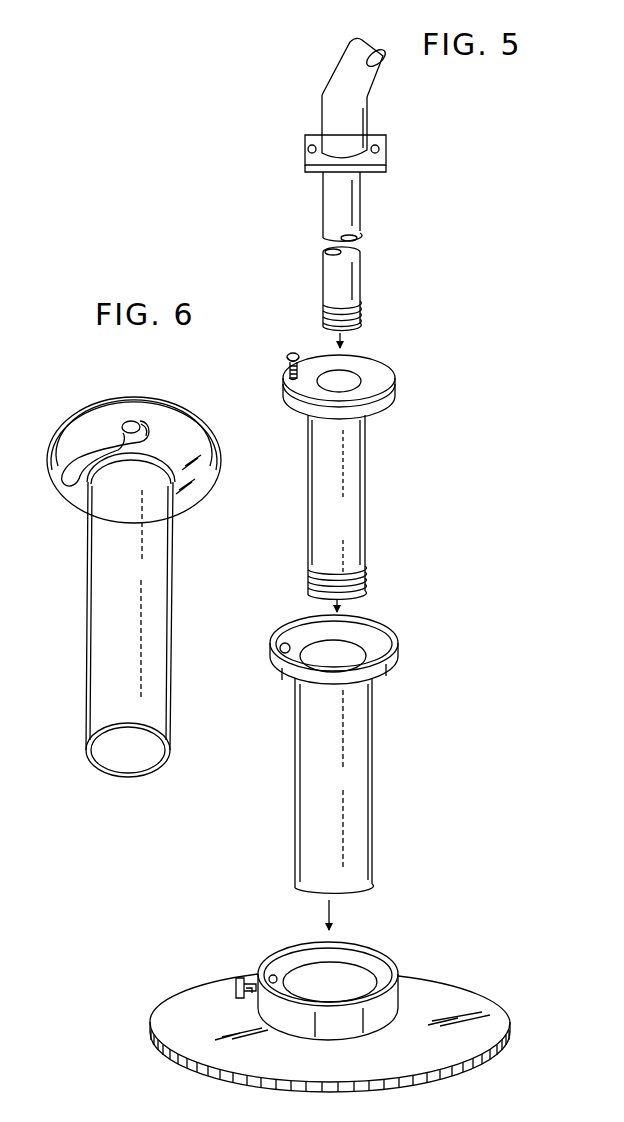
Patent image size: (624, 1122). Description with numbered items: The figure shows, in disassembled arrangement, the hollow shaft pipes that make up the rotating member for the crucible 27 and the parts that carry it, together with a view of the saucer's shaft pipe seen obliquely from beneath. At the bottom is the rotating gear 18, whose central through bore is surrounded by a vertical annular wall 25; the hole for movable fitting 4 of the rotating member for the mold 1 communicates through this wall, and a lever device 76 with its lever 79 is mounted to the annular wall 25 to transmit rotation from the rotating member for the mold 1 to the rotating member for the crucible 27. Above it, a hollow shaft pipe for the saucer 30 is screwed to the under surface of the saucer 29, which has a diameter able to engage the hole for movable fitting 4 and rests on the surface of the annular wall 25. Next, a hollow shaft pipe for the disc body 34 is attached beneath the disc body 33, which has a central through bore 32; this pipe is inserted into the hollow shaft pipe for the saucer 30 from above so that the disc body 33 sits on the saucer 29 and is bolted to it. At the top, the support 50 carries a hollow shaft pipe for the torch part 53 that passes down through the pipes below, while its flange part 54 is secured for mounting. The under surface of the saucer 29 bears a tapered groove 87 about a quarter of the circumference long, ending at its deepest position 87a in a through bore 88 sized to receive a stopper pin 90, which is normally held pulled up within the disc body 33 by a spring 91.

In FIG. 5, the rotating member for the mold 1 is at (335, 1014).
In FIG. 5, the hole for movable fitting 4 is at (347, 972).
In FIG. 5, the rotating gear 18 is at (462, 1000).
In FIG. 5, the annular wall 25 is at (397, 990).
In FIG. 5, the rotating member for the crucible 27 is at (372, 432).
In FIG. 5, the saucer 29 is at (373, 640).
In FIG. 6, the saucer 29 is at (78, 505).
In FIG. 5, the hollow shaft pipe for the saucer 30 is at (360, 747).
In FIG. 6, the hollow shaft pipe for the saucer 30 is at (99, 570).
In FIG. 5, the through bore 32 is at (343, 375).
In FIG. 5, the disc body 33 is at (390, 376).
In FIG. 5, the hollow shaft pipe for the disc body 34 is at (357, 485).
In FIG. 5, the support 50 is at (368, 83).
In FIG. 5, the hollow shaft pipe for the torch part 53 is at (353, 256).
In FIG. 5, the flange part of the support 54 is at (376, 140).
In FIG. 5, the lever device 76 is at (231, 976).
In FIG. 5, the lever 79 is at (244, 991).
In FIG. 6, the tapered groove 87 is at (86, 440).
In FIG. 6, the deepest position 87a is at (143, 428).
In FIG. 5, the through bore 88 is at (282, 647).
In FIG. 6, the through bore 88 is at (125, 421).
In FIG. 5, the stopper pin 90 is at (290, 352).
In FIG. 5, the spring 91 is at (288, 374).